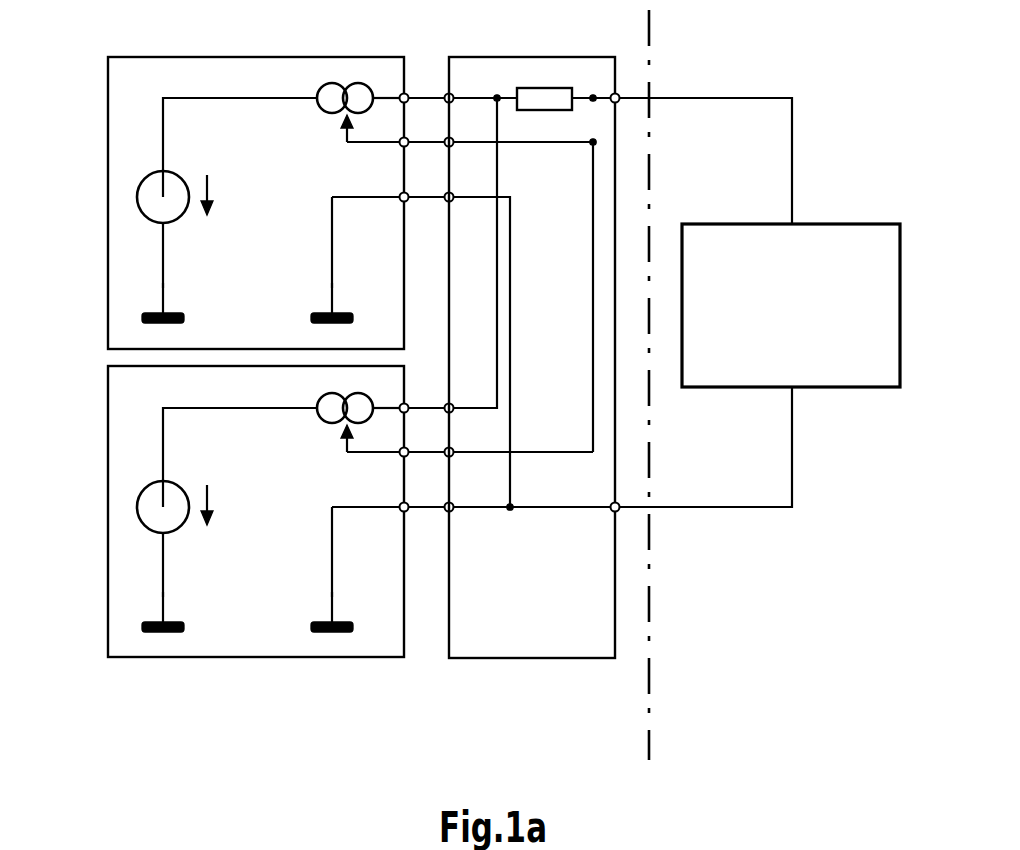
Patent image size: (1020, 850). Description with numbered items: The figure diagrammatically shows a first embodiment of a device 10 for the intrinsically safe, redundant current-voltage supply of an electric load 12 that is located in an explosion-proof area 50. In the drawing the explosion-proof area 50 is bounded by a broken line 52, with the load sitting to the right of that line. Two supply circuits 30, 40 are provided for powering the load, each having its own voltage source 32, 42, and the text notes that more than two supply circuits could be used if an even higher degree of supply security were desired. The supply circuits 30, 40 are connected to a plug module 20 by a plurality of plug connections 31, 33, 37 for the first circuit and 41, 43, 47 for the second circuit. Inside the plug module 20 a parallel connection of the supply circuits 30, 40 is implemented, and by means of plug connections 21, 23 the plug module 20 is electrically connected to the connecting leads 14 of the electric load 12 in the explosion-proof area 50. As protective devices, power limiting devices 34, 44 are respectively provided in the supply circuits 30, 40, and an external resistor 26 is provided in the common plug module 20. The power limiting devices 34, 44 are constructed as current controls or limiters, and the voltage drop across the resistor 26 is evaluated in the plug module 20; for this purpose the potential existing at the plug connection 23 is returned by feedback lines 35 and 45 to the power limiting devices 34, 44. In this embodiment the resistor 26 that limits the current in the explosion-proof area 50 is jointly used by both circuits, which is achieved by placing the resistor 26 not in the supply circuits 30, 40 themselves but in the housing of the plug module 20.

The device 10 is at (82, 54).
The electric load 12 is at (779, 321).
The connecting leads 14 is at (793, 138).
The plug module 20 is at (519, 596).
The plug connection 21 is at (625, 510).
The plug connection 23 is at (625, 96).
The external resistor 26 is at (548, 87).
The supply circuit 30 is at (246, 57).
The plug connection 31 is at (421, 200).
The voltage source 32 is at (178, 173).
The plug connection 33 is at (421, 145).
The power limiting device 34 is at (320, 84).
The feedback line 35 is at (369, 144).
The plug connection 37 is at (421, 101).
The supply circuit 40 is at (243, 658).
The plug connection 41 is at (421, 510).
The voltage source 42 is at (178, 483).
The plug connection 43 is at (421, 455).
The power limiting device 44 is at (318, 422).
The feedback line 45 is at (369, 454).
The plug connection 47 is at (421, 411).
The explosion-proof area 50 is at (789, 64).
The broken line 52 is at (650, 607).